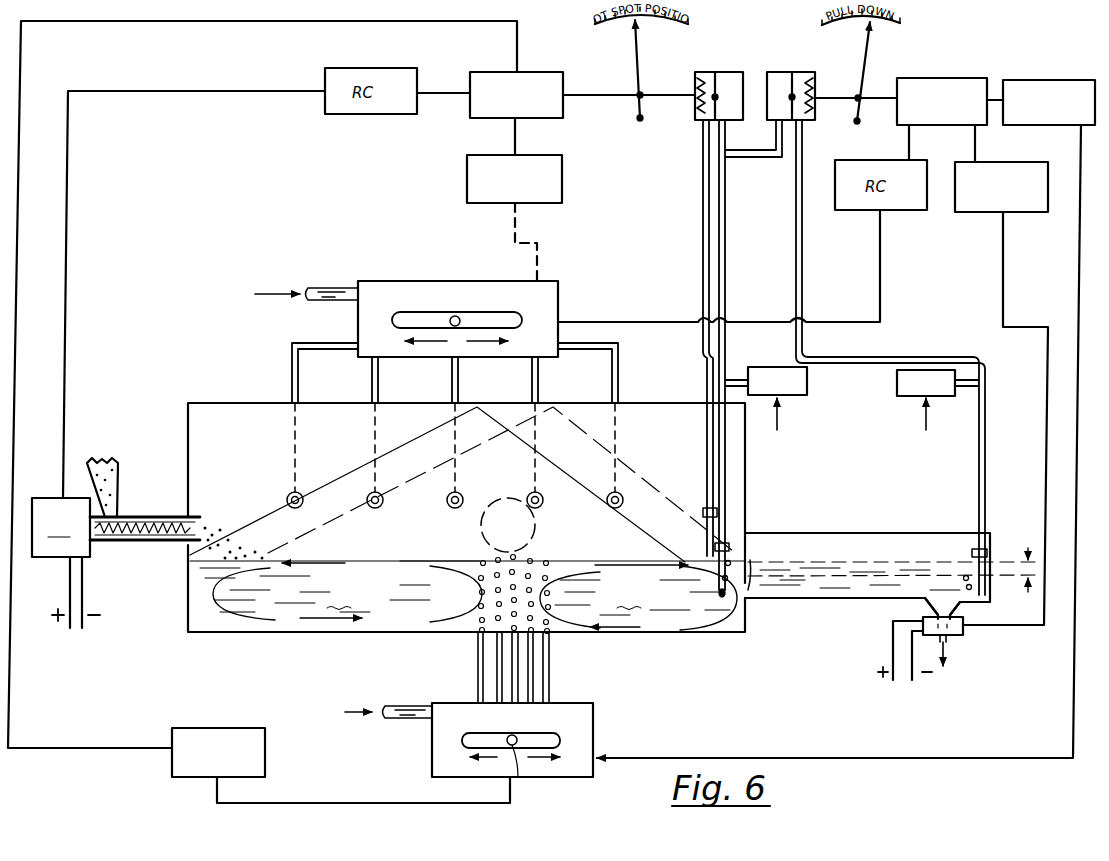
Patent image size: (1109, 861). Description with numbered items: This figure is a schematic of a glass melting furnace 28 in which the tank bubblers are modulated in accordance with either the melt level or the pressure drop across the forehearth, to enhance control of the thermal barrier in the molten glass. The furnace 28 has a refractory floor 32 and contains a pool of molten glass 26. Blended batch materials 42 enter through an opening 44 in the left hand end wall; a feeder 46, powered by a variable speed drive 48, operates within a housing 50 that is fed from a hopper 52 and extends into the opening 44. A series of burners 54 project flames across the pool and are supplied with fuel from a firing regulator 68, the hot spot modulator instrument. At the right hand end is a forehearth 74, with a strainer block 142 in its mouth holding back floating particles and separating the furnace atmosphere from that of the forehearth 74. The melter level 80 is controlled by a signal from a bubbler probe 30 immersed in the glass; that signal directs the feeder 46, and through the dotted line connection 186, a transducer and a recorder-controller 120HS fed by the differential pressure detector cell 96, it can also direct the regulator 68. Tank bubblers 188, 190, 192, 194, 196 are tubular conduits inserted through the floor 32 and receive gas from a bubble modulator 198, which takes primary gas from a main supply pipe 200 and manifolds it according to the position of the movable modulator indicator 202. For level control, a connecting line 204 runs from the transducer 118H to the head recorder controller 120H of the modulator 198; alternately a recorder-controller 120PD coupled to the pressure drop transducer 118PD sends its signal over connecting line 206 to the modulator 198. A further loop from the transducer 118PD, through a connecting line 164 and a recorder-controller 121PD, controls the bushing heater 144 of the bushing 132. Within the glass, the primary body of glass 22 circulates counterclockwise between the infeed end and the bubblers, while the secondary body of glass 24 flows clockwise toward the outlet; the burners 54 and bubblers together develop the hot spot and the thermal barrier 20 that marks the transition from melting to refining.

The thermal barrier 20 is at (518, 585).
The primary body of glass 22 is at (341, 592).
The secondary body of glass 24 is at (638, 597).
The pool of molten glass 26 is at (458, 560).
The furnace 28 is at (190, 400).
The bubbler probe 30 is at (718, 588).
The refractory floor 32 is at (210, 630).
The blended batch materials 42 is at (225, 528).
The opening 44 is at (183, 514).
The feeder 46 is at (155, 542).
The variable speed drive 48 is at (66, 563).
The housing 50 is at (136, 540).
The hopper 52 is at (123, 465).
The burners 54 is at (288, 497).
The firing regulator 68 is at (563, 282).
The forehearth 74 is at (840, 533).
The melter level 80 is at (345, 560).
The differential pressure detector cell 96 is at (733, 68).
The transducer 118H is at (490, 72).
The pressure drop transducer 118PD is at (908, 78).
The recorder controller 120H is at (182, 778).
The recorder-controller 120HS is at (565, 186).
The recorder-controller 120PD is at (1012, 80).
The recorder-controller 121PD is at (978, 162).
The bushing 132 is at (926, 602).
The strainer block 142 is at (750, 582).
The bushing heater 144 is at (950, 636).
The connecting line 164 is at (1004, 308).
The dotted line connection 186 is at (541, 243).
The tank bubbler 188 is at (477, 647).
The tank bubbler 190 is at (496, 650).
The tank bubbler 192 is at (512, 665).
The tank bubbler 194 is at (535, 675).
The tank bubbler 196 is at (550, 690).
The bubble modulator 198 is at (598, 705).
The main supply pipe 200 is at (412, 722).
The movable modulator indicator 202 is at (522, 780).
The connecting line 204 is at (150, 22).
The connecting line 206 is at (1076, 278).